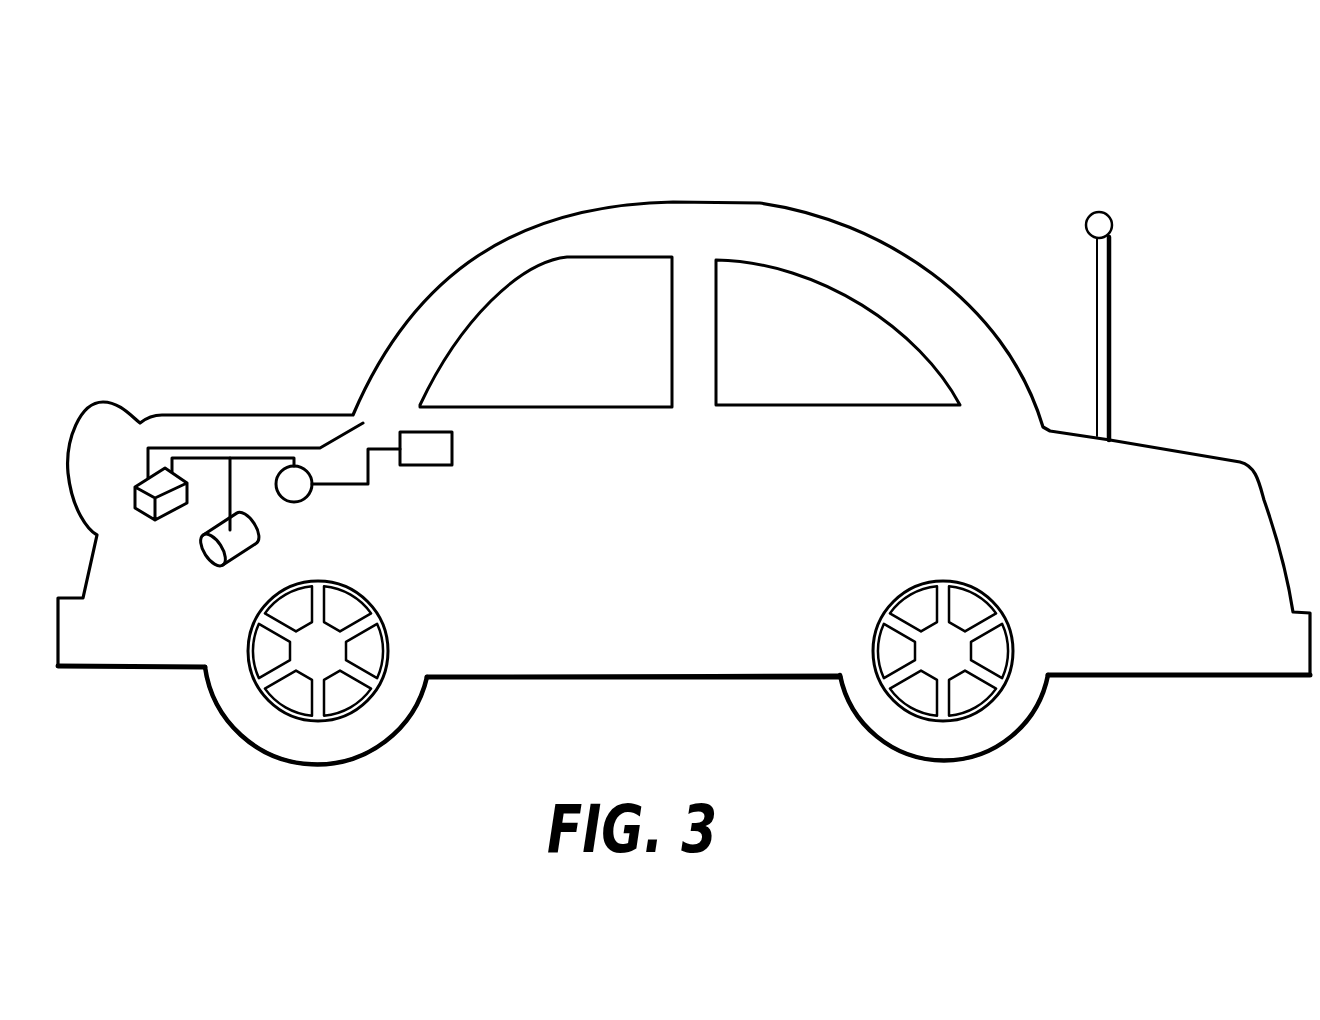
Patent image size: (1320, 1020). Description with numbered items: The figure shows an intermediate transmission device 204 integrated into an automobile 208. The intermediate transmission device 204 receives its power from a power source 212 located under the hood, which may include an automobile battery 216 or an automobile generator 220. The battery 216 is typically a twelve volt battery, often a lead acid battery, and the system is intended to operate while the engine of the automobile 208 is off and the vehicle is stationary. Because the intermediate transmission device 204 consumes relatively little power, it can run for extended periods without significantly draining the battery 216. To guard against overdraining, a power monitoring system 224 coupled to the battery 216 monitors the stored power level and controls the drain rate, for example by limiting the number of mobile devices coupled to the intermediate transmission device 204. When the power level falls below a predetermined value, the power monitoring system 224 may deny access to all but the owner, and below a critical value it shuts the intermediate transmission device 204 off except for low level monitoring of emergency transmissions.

The intermediate transmission device 204 is at (422, 466).
The automobile 208 is at (712, 160).
The power source 212 is at (241, 538).
The automobile battery 216 is at (147, 519).
The automobile generator 220 is at (211, 570).
The power monitoring system 224 is at (305, 503).